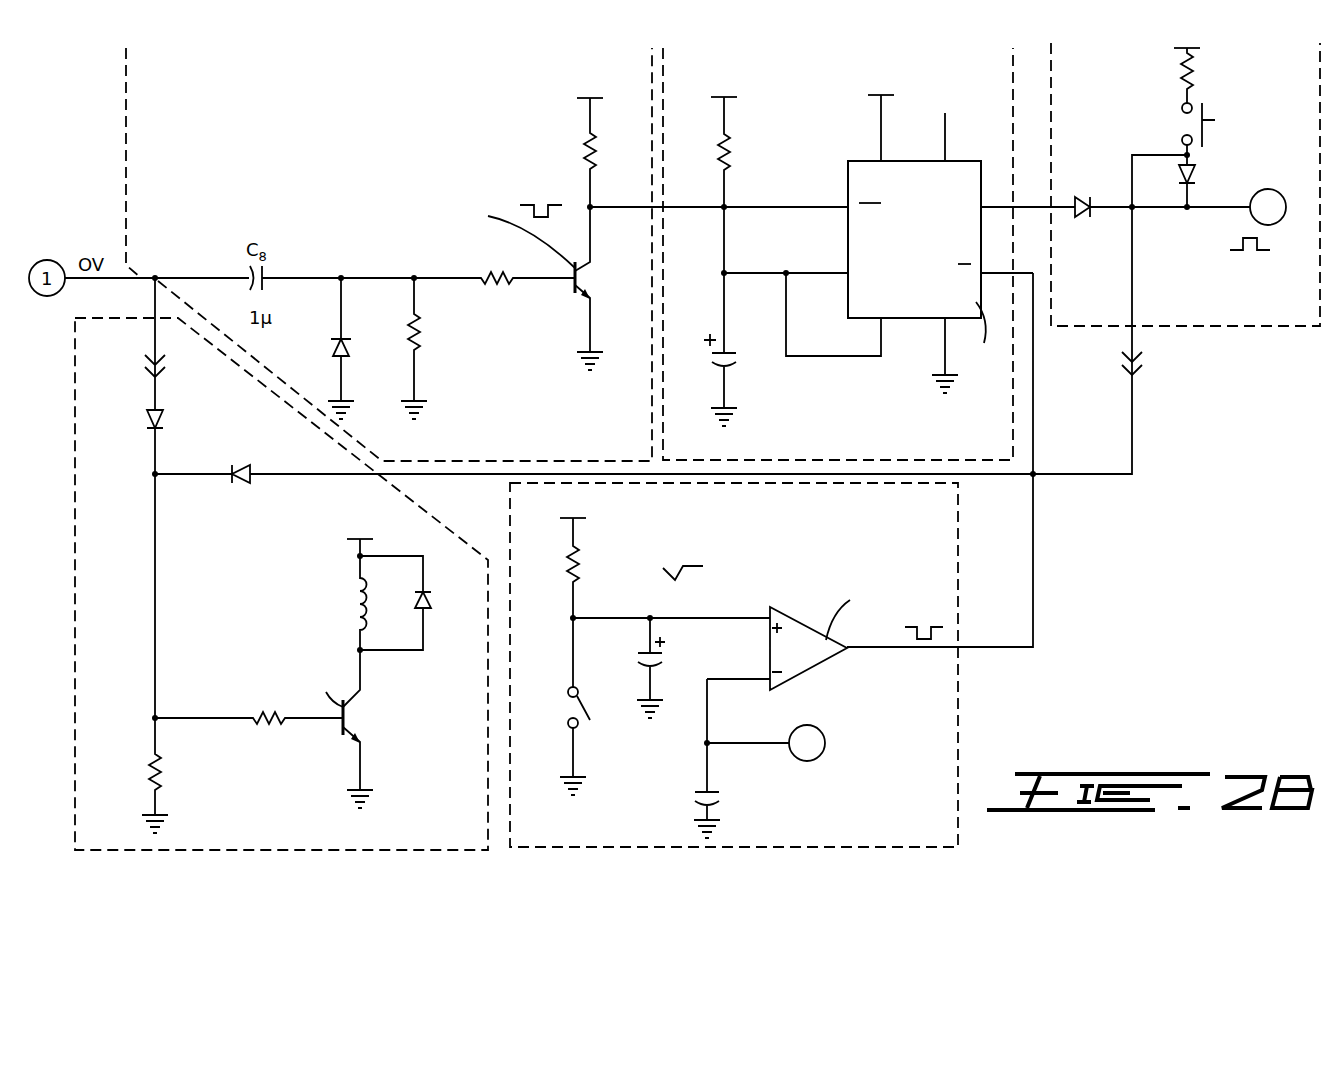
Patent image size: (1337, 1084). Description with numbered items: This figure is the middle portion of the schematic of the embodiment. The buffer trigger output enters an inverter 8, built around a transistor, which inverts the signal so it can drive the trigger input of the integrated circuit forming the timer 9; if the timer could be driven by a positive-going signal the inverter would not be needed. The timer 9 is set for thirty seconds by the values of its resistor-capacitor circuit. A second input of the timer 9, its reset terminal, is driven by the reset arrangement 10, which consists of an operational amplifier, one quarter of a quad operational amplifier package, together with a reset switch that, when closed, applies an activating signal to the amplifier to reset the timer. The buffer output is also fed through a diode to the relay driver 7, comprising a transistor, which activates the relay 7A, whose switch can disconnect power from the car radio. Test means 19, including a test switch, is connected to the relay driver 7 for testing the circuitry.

The relay driver 7 is at (264, 564).
The relay 7A is at (418, 653).
The inverter 8 is at (118, 177).
The timer 9 is at (1024, 443).
The reset arrangement 10 is at (968, 745).
The test means 19 is at (1253, 336).